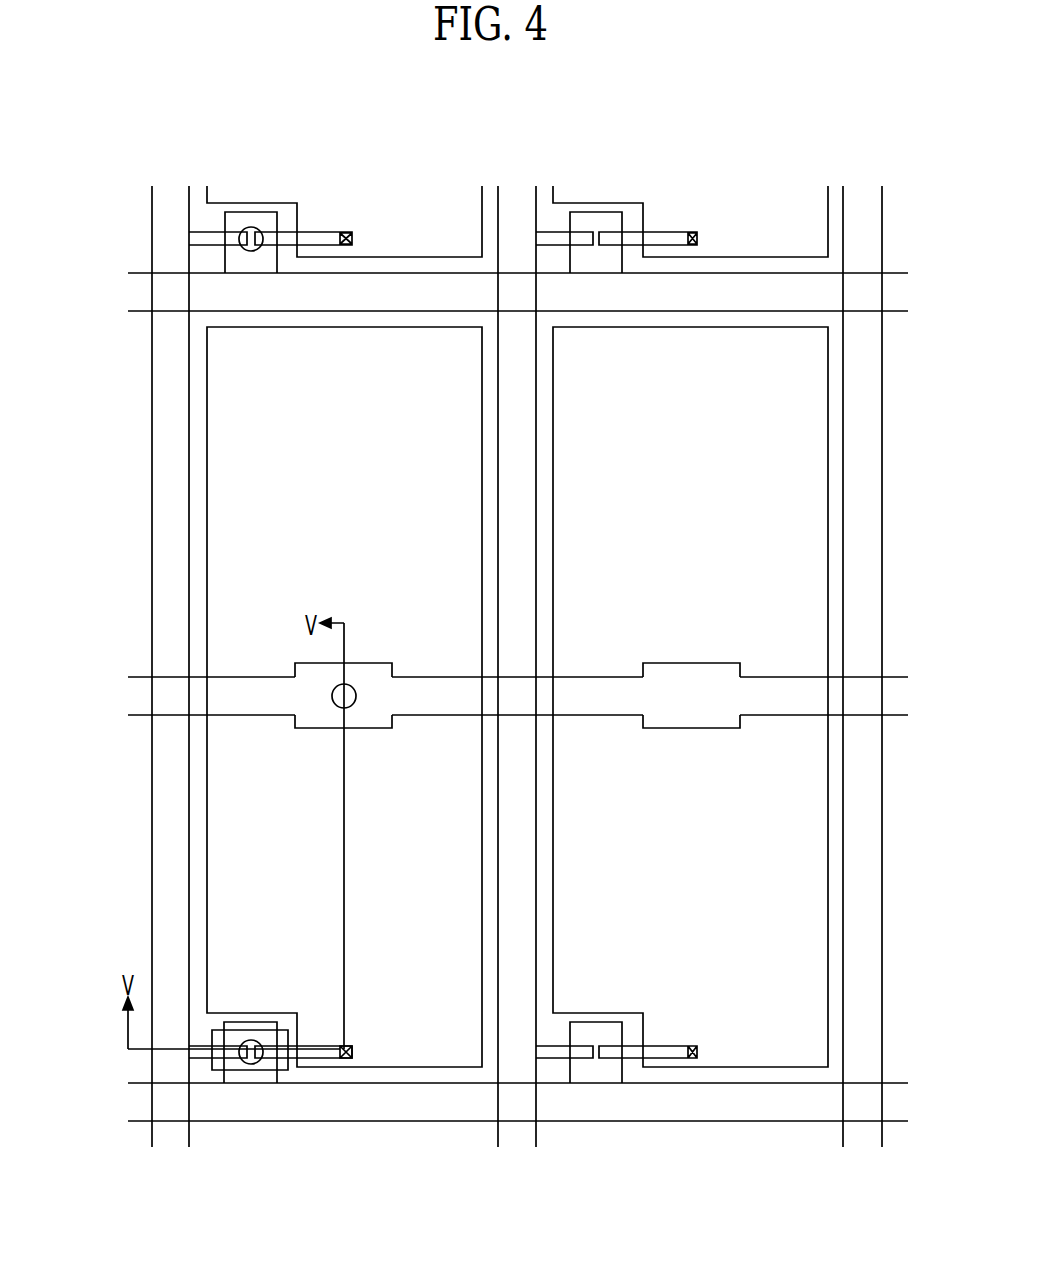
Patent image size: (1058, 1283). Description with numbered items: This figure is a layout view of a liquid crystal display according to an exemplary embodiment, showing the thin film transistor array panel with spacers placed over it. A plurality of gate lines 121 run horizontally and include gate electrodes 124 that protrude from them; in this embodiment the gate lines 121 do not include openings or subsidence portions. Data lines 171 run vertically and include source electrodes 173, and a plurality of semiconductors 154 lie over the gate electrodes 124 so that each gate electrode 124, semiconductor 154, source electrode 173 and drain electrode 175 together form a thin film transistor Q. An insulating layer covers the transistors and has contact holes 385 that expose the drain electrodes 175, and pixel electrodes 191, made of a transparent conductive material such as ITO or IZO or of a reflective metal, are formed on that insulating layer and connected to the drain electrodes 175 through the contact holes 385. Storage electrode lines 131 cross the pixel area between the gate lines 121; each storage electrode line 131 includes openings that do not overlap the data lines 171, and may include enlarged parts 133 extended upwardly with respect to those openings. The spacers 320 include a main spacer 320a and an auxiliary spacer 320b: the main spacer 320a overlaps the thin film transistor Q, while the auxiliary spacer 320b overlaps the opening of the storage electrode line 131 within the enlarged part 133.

The gate line 121 is at (268, 1122).
The gate electrode 124 is at (234, 1022).
The storage electrode line 131 is at (235, 676).
The enlarged part 133 is at (307, 662).
The semiconductor 154 is at (212, 1063).
The data line 171 is at (152, 745).
The source electrode 173 is at (218, 1072).
The drain electrode 175 is at (313, 1060).
The pixel electrode 191 is at (207, 813).
The spacer 320 is at (297, 782).
The main spacer 320a is at (253, 1039).
The auxiliary spacer 320b is at (341, 708).
The contact hole 385 is at (347, 1058).
The thin film transistor Q is at (273, 1018).